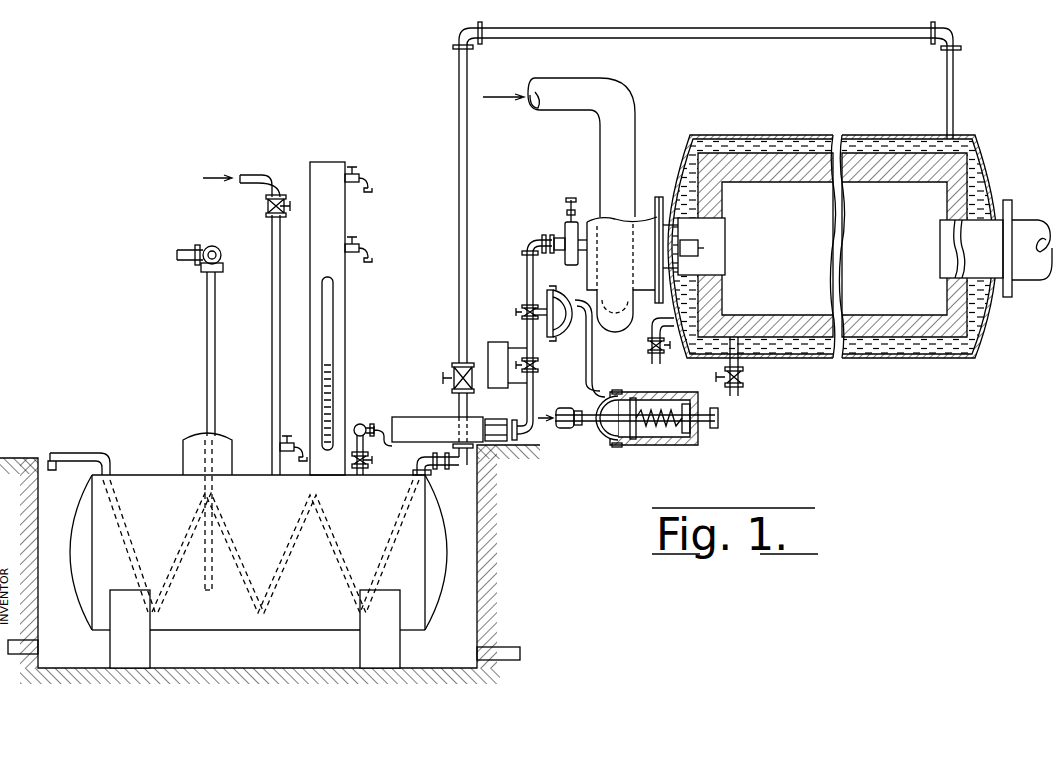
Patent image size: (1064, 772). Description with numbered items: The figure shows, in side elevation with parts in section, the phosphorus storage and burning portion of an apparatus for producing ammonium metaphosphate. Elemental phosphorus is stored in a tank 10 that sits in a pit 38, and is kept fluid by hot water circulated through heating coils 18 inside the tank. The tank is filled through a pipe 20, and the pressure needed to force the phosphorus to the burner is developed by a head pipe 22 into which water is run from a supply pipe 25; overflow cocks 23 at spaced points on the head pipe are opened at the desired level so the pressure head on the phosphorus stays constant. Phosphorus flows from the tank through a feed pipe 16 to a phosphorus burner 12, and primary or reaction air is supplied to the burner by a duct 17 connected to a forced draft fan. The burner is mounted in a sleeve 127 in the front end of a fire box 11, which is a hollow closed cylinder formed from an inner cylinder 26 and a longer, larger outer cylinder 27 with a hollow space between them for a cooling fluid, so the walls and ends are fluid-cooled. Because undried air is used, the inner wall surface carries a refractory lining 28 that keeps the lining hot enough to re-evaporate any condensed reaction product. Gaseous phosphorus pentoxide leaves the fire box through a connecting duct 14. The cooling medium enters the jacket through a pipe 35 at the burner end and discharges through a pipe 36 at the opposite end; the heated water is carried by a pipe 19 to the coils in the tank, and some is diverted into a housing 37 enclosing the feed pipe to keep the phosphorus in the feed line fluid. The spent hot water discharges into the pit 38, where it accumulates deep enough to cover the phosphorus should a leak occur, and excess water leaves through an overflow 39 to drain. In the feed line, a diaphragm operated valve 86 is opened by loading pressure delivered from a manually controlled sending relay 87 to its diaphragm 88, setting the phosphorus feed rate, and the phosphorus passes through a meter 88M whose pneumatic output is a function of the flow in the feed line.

The tank 10 is at (150, 475).
The fire box 11 is at (829, 245).
The phosphorus burner 12 is at (626, 256).
The connecting duct 14 is at (1022, 216).
The phosphorus feed pipe 16 is at (527, 283).
The air duct 17 is at (600, 162).
The heating coils 18 is at (272, 596).
The hot water pipe 19 is at (459, 288).
The filling pipe 20 is at (207, 327).
The head pipe 22 is at (345, 292).
The overflow cocks 23 is at (368, 182).
The water supply pipe 25 is at (272, 303).
The inner cylinder 26 is at (784, 345).
The outer cylinder 27 is at (822, 350).
The refractory lining 28 is at (805, 336).
The cooling medium inlet pipe 35 is at (660, 364).
The cooling medium discharge pipe 36 is at (947, 112).
The housing 37 is at (442, 435).
The pit 38 is at (463, 546).
The overflow 39 is at (38, 647).
The diaphragm operated valve 86 is at (562, 276).
The sending relay 87 is at (670, 471).
The diaphragm 88 is at (566, 335).
The meter 88M is at (520, 321).
The sleeve 127 is at (712, 231).